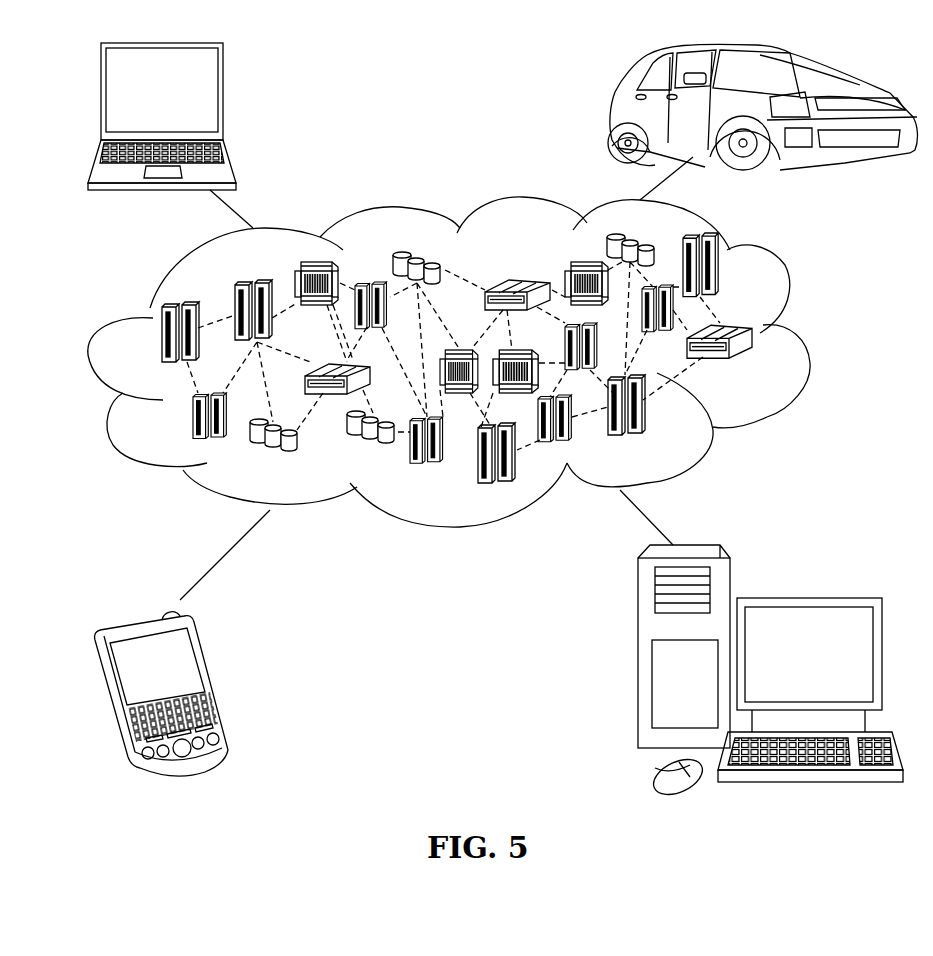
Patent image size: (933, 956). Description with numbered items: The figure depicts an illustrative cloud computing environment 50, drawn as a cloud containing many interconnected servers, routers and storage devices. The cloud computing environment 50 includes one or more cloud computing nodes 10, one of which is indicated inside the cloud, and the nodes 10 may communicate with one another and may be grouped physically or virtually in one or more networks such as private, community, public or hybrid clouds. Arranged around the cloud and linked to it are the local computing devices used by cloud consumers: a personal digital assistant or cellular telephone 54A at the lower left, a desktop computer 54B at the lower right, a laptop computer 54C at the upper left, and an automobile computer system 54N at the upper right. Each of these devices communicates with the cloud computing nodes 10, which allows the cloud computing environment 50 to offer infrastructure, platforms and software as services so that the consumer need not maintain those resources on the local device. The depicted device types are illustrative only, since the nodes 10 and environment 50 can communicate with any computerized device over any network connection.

The cloud computing environment 50 is at (808, 340).
The cloud computing node 10 is at (757, 368).
The personal digital assistant or cellular telephone 54A is at (217, 678).
The desktop computer 54B is at (803, 597).
The laptop computer 54C is at (223, 98).
The automobile computer system 54N is at (610, 110).